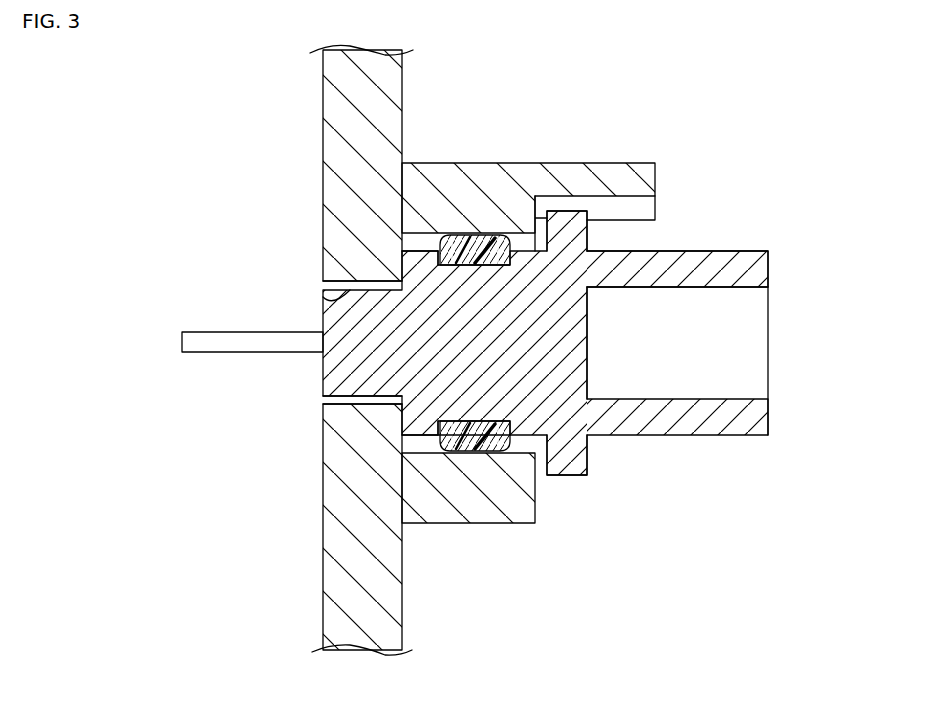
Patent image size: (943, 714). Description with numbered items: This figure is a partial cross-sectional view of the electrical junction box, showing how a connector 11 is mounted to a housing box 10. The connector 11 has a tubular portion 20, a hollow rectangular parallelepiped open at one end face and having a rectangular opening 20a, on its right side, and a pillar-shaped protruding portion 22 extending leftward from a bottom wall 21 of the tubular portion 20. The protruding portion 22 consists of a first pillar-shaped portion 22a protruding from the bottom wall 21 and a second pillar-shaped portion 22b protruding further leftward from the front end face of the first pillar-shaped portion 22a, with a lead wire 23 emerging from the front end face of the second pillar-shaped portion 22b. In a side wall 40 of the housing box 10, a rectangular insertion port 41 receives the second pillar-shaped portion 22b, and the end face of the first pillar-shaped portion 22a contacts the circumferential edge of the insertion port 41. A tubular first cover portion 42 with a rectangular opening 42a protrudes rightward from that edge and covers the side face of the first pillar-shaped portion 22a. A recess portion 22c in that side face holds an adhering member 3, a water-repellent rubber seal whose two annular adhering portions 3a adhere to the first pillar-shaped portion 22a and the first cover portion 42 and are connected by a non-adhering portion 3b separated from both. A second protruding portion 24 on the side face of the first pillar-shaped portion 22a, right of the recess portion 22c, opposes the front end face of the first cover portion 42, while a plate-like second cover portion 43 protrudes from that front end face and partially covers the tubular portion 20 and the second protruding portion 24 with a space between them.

The adhering member 3 is at (517, 233).
The adhering portion 3a is at (470, 233).
The non-adhering portion 3b is at (480, 233).
The housing box 10 is at (312, 250).
The connector 11 is at (731, 240).
The tubular portion 20 is at (703, 427).
The rectangular opening 20a is at (743, 288).
The bottom wall 21 is at (568, 352).
The protruding portion 22 is at (515, 453).
The first pillar-shaped portion 22a is at (404, 249).
The second pillar-shaped portion 22b is at (342, 368).
The recess portion 22c is at (433, 232).
The lead wire 23 is at (217, 346).
The second protruding portion 24 is at (587, 240).
The side wall 40 is at (340, 103).
The insertion port 41 is at (323, 303).
The first cover portion 42 is at (413, 193).
The rectangular opening 42a is at (535, 233).
The second cover portion 43 is at (630, 168).